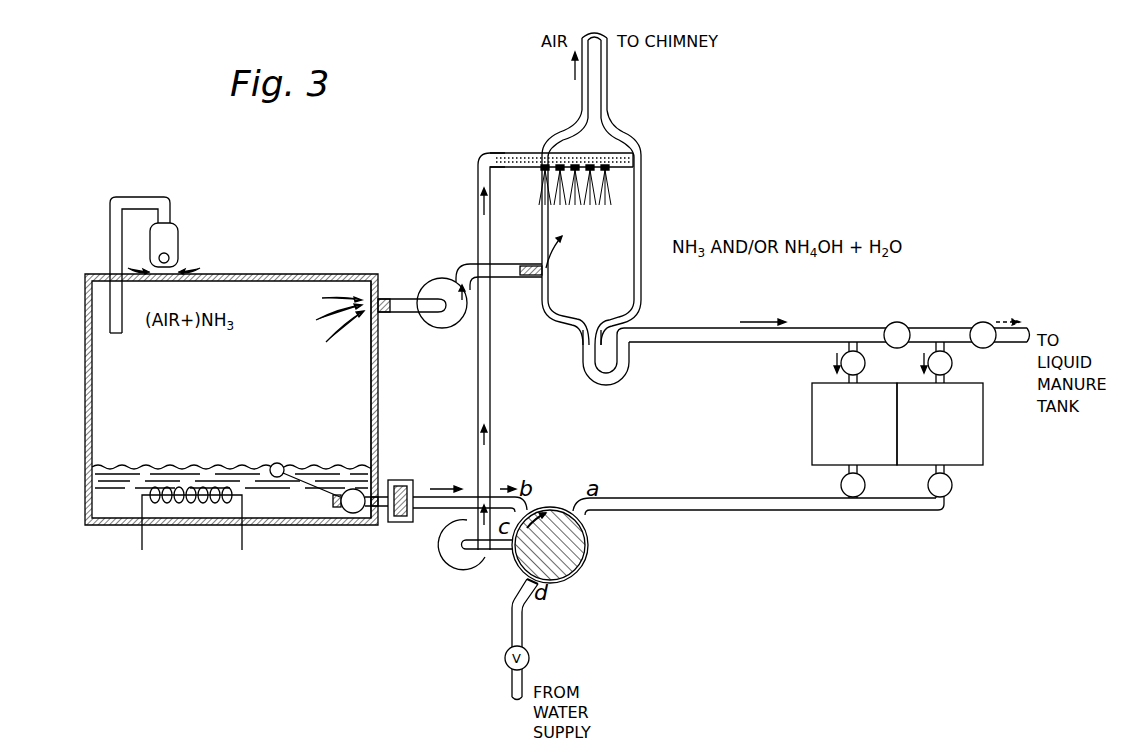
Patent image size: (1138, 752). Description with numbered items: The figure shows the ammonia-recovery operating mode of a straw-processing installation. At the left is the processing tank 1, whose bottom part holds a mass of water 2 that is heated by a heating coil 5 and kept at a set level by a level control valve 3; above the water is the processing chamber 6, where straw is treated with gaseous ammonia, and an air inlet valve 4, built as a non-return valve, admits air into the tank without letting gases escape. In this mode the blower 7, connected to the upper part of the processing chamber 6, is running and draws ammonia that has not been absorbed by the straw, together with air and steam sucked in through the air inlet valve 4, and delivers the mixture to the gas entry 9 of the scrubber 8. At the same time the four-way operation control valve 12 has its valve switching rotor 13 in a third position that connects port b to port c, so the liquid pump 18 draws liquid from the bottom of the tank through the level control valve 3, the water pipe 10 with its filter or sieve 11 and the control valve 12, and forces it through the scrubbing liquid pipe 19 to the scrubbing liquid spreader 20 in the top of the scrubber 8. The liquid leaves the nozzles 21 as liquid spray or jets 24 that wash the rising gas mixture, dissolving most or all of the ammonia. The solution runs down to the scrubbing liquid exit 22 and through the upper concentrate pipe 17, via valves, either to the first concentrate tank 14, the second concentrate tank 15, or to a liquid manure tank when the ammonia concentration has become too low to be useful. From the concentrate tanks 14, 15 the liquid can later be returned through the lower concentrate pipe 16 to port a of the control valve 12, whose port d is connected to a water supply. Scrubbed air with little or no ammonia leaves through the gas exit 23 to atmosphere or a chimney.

The processing tank 1 is at (85, 363).
The water 2 is at (100, 501).
The level control valve 3 is at (350, 515).
The air inlet valve 4 is at (178, 240).
The heating coil 5 is at (193, 510).
The processing chamber 6 is at (372, 372).
The blower 7 is at (440, 317).
The scrubber 8 is at (641, 216).
The gas entry 9 is at (533, 282).
The water pipe 10 is at (436, 509).
The filter or sieve 11 is at (400, 480).
The four-way operation control valve 12 is at (584, 566).
The valve switching rotor 13 is at (578, 541).
The first concentrate tank 14 is at (812, 420).
The second concentrate tank 15 is at (975, 426).
The lower concentrate pipe 16 is at (736, 511).
The upper concentrate pipe 17 is at (730, 342).
The liquid pump 18 is at (458, 556).
The scrubbing liquid pipe 19 is at (490, 410).
The scrubbing liquid spreader 20 is at (570, 153).
The nozzles 21 is at (617, 170).
The scrubbing liquid exit 22 is at (593, 316).
The gas exit 23 is at (617, 121).
The liquid spray or jets 24 is at (560, 176).